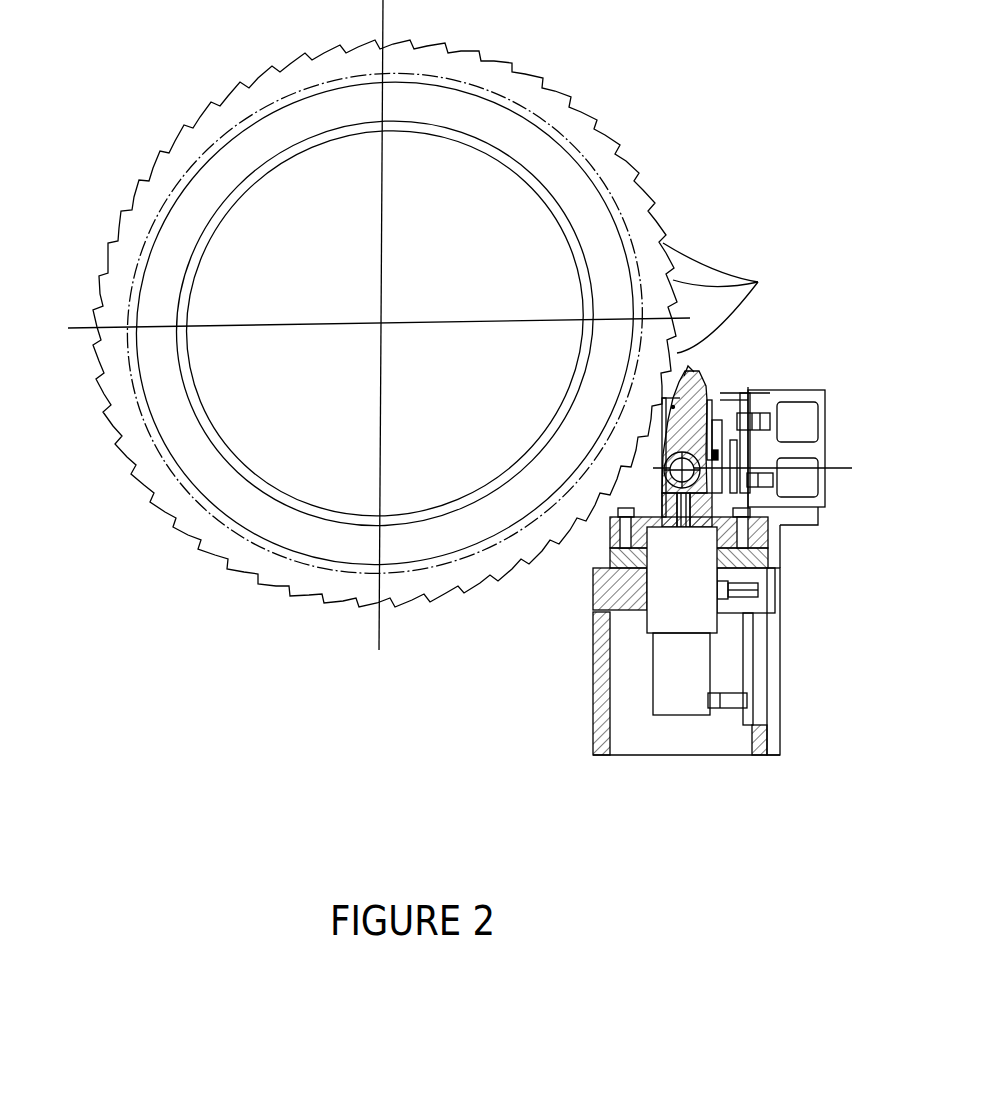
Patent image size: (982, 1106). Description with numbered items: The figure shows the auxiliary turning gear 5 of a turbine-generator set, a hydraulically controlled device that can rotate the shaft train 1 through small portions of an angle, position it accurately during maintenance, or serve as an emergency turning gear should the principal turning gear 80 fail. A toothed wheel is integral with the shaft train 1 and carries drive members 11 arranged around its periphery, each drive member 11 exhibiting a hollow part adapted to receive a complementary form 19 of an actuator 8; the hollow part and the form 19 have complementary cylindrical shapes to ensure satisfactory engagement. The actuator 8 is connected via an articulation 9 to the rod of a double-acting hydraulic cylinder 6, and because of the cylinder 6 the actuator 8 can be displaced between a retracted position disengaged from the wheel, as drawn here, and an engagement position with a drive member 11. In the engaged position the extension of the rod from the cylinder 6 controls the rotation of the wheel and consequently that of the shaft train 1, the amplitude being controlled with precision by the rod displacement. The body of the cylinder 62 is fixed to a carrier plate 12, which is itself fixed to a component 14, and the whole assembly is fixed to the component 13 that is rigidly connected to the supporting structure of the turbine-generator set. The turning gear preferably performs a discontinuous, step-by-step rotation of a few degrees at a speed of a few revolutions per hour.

The shaft train 1 is at (385, 323).
The principal turning gear 80 is at (557, 132).
The drive members 11 is at (729, 298).
The actuator 8 is at (708, 393).
The complementary form 19 is at (692, 368).
The articulation 9 is at (658, 477).
The component 14 is at (768, 532).
The carrier plate 12 is at (768, 562).
The component 13 is at (600, 598).
The body of the cylinder 62 is at (700, 613).
The hydraulic cylinder 6 is at (670, 698).
The auxiliary turning gear 5 is at (472, 593).